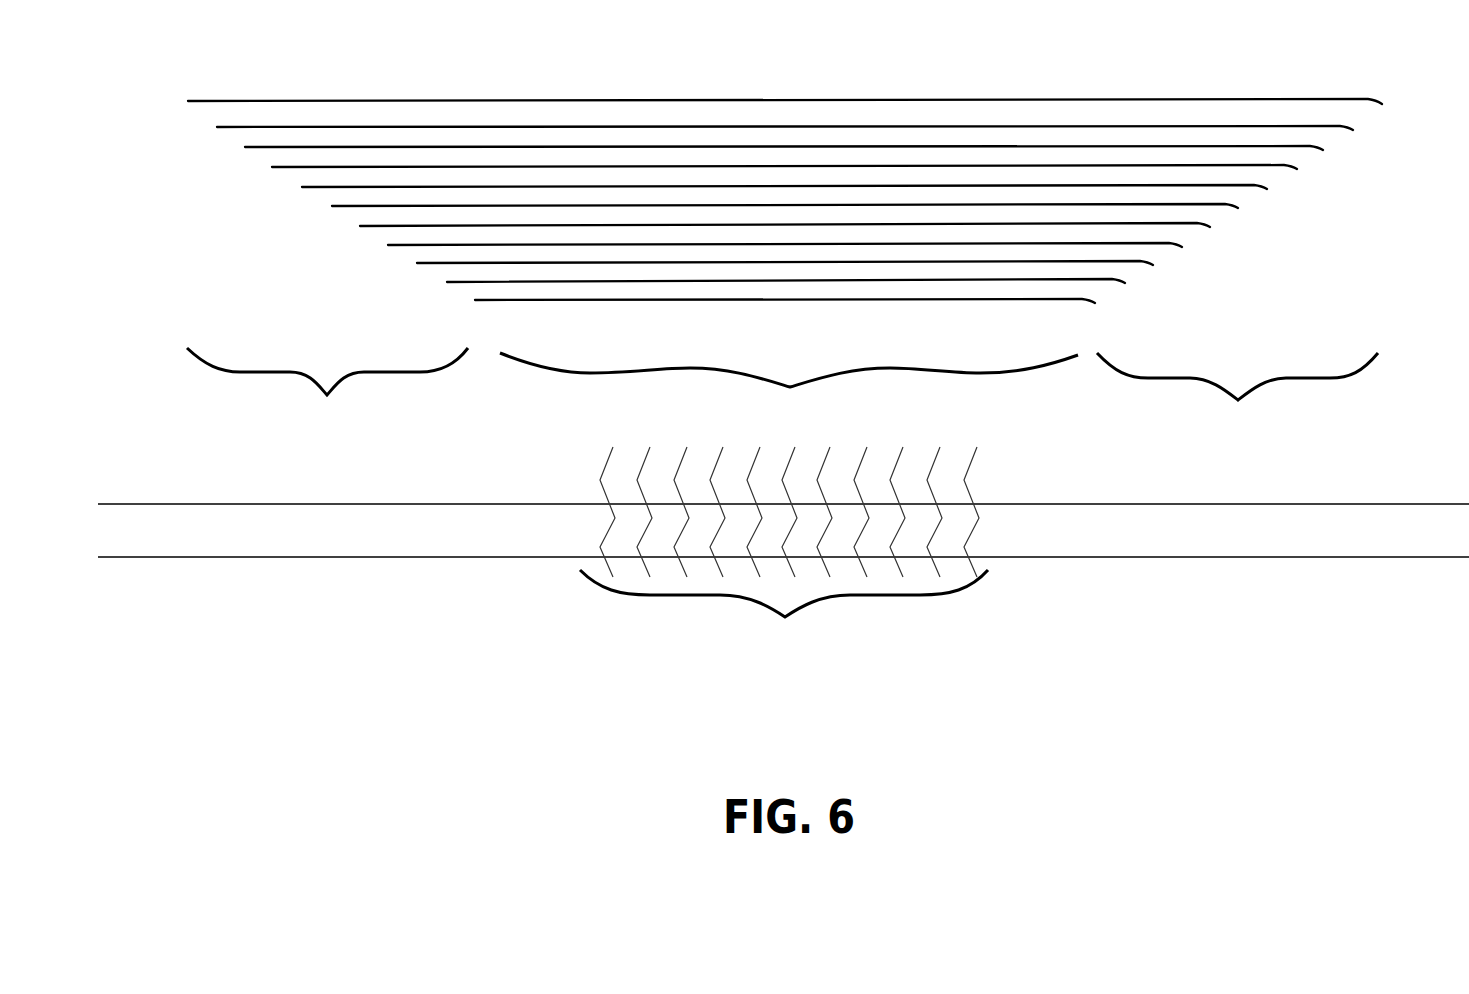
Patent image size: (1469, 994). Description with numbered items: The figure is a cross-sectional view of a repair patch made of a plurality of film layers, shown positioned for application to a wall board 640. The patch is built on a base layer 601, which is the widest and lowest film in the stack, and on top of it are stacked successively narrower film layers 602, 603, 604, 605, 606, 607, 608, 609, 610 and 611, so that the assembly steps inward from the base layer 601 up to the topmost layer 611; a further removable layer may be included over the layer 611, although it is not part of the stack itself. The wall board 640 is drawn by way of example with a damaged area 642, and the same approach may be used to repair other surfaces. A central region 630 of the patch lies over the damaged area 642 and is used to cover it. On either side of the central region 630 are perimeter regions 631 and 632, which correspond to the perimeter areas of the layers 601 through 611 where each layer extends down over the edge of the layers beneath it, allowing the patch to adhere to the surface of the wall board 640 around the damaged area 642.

The base layer 601 is at (605, 298).
The stacked layer 602 is at (552, 278).
The stacked layer 603 is at (578, 260).
The stacked layer 604 is at (610, 242).
The stacked layer 605 is at (643, 222).
The stacked layer 606 is at (682, 202).
The stacked layer 607 is at (722, 185).
The stacked layer 608 is at (765, 163).
The stacked layer 609 is at (817, 145).
The stacked layer 610 is at (860, 125).
The stacked layer 611 is at (907, 98).
The central region 630 is at (789, 384).
The perimeter region 631 is at (327, 386).
The perimeter region 632 is at (1237, 393).
The wall board 640 is at (292, 558).
The damaged area 642 is at (784, 549).